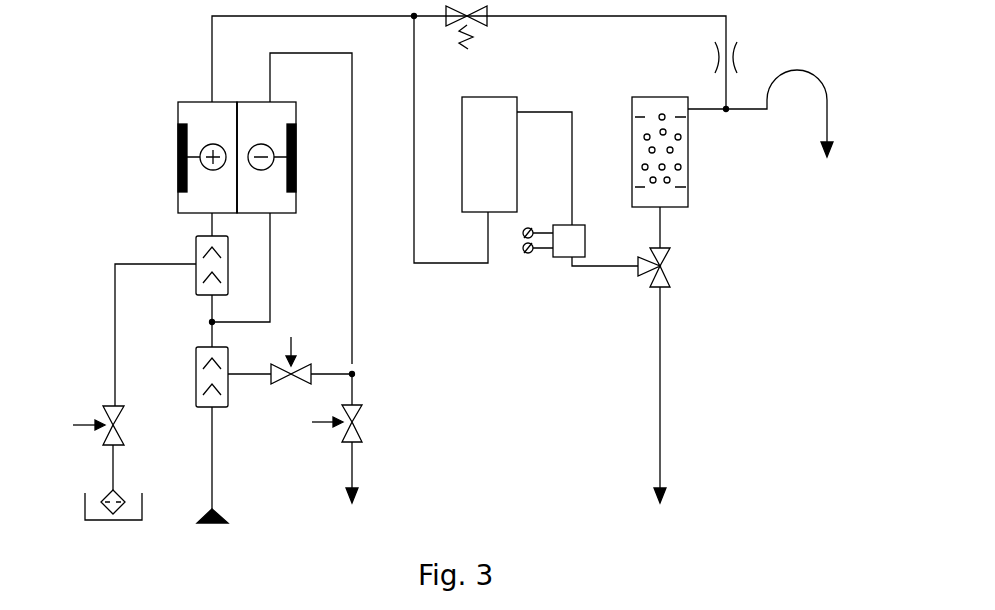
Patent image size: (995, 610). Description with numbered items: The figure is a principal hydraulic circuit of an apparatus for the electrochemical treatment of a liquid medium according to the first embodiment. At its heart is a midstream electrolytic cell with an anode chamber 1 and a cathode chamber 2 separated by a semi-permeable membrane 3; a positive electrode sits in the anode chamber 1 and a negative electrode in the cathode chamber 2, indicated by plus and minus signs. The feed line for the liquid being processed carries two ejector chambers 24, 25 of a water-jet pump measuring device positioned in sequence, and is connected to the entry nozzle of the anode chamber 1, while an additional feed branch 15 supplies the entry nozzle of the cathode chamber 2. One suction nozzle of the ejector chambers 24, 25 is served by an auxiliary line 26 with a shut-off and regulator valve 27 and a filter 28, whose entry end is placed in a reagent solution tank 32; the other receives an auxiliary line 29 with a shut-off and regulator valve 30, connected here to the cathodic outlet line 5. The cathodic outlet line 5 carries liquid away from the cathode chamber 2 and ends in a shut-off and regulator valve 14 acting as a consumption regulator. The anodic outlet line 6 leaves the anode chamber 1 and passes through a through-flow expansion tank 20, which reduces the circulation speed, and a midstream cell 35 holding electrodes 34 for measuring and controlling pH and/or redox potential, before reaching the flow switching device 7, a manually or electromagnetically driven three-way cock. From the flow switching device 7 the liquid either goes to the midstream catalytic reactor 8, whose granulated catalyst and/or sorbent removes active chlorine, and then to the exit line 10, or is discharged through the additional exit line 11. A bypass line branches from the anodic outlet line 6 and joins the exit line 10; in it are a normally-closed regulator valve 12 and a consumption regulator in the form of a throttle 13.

The anode chamber 1 is at (272, 117).
The cathode chamber 2 is at (213, 124).
The membrane 3 is at (237, 193).
The cathodic outlet line 5 is at (352, 125).
The anodic outlet line 6 is at (270, 16).
The flow switching device 7 is at (672, 265).
The midstream catalytic reactor 8 is at (688, 147).
The exit line 10 is at (802, 75).
The additional exit line 11 is at (660, 423).
The regulator valve 12 is at (488, 20).
The throttle 13 is at (742, 58).
The shut-off and regulator valve 14 is at (347, 445).
The additional feed branch 15 is at (270, 272).
The through-flow expansion tank 20 is at (483, 170).
The ejector chamber 24 is at (196, 288).
The ejector chamber 25 is at (196, 373).
The auxiliary line 26 is at (112, 300).
The shut-off and regulator valve 27 is at (105, 408).
The filter 28 is at (124, 492).
The auxiliary line 29 is at (347, 372).
The shut-off and regulator valve 30 is at (291, 380).
The reagent solution tank 32 is at (115, 520).
The electrodes 34 is at (525, 255).
The midstream cell 35 is at (552, 258).